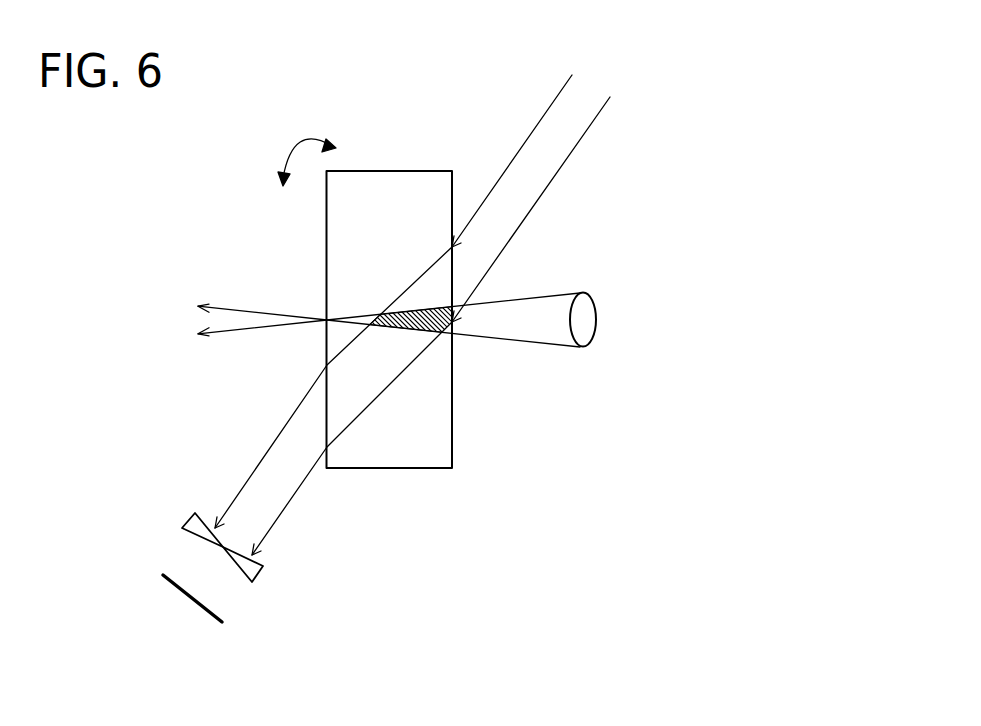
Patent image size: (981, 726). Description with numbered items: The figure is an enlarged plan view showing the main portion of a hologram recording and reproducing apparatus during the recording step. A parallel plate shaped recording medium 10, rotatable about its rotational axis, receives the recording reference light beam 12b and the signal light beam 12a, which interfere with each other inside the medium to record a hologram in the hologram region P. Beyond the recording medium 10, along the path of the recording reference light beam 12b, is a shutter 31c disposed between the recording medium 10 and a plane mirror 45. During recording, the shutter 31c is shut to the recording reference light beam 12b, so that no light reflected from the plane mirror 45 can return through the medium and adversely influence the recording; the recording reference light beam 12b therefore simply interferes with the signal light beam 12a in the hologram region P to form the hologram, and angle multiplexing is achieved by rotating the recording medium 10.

The recording medium 10 is at (388, 202).
The recording reference light beam 12b is at (520, 200).
The signal light beam 12a is at (585, 318).
The hologram region P is at (415, 308).
The shutter 31c is at (188, 527).
The plane mirror 45 is at (178, 595).